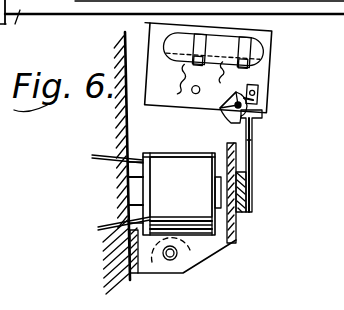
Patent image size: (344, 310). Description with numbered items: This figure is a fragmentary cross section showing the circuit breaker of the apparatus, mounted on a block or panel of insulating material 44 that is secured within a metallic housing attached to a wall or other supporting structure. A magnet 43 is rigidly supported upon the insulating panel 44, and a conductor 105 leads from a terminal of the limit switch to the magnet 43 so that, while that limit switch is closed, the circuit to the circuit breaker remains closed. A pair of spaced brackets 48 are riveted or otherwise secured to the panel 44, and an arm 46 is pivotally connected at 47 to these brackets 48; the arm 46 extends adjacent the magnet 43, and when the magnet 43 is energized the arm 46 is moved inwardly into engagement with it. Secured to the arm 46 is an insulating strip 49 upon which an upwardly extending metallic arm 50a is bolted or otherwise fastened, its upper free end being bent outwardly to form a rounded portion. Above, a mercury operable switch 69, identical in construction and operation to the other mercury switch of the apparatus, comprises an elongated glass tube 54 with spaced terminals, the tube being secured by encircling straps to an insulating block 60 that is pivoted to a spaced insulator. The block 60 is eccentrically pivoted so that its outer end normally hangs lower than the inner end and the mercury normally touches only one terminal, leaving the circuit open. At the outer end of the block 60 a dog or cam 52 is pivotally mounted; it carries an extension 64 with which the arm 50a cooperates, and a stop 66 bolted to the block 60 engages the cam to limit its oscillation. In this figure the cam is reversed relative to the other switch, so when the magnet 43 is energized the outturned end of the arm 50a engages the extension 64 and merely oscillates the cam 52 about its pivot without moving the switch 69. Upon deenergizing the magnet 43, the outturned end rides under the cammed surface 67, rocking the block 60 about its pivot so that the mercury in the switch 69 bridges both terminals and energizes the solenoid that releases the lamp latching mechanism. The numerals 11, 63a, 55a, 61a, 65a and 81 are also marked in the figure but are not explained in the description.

The frame 11 is at (172, 21).
The insulating panel 44 is at (122, 50).
The insulating block 60 is at (236, 69).
The mercury operable switch 69 is at (247, 41).
The glass tube 54 is at (214, 49).
The tab 63a is at (221, 51).
The spring 55a is at (185, 63).
The pin 61a is at (196, 86).
The lug 65a is at (245, 89).
The cammed surface 67 is at (231, 117).
The cam 52 is at (219, 109).
The stop 66 is at (258, 100).
The extension 64 is at (264, 161).
The metallic arm 50a is at (253, 140).
The arm 46 is at (238, 226).
The insulating strip 49 is at (247, 202).
The magnet 43 is at (174, 194).
The rod 81 is at (93, 156).
The conductor 105 is at (110, 224).
The brackets 48 is at (152, 268).
The pivot 47 is at (172, 256).